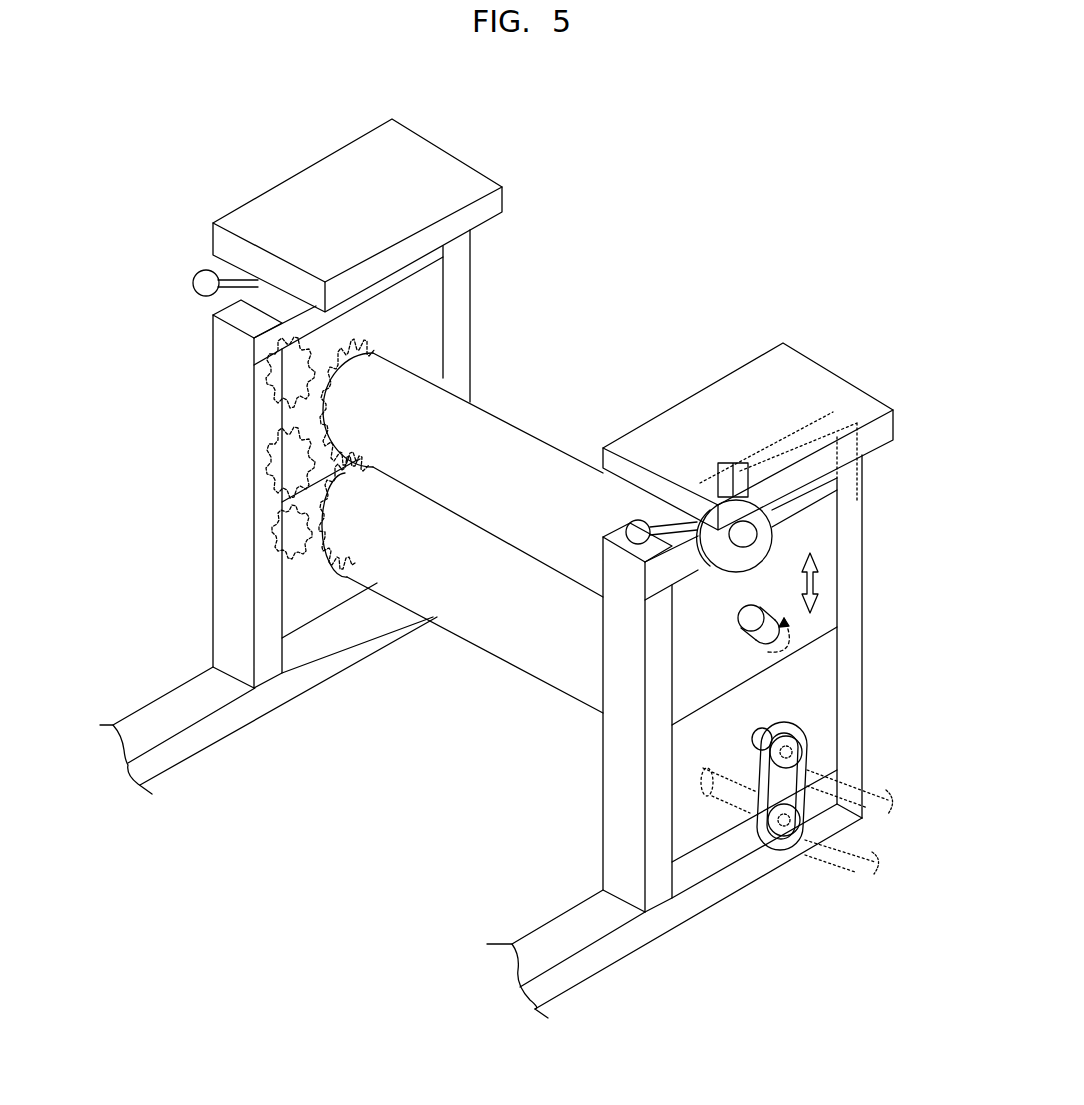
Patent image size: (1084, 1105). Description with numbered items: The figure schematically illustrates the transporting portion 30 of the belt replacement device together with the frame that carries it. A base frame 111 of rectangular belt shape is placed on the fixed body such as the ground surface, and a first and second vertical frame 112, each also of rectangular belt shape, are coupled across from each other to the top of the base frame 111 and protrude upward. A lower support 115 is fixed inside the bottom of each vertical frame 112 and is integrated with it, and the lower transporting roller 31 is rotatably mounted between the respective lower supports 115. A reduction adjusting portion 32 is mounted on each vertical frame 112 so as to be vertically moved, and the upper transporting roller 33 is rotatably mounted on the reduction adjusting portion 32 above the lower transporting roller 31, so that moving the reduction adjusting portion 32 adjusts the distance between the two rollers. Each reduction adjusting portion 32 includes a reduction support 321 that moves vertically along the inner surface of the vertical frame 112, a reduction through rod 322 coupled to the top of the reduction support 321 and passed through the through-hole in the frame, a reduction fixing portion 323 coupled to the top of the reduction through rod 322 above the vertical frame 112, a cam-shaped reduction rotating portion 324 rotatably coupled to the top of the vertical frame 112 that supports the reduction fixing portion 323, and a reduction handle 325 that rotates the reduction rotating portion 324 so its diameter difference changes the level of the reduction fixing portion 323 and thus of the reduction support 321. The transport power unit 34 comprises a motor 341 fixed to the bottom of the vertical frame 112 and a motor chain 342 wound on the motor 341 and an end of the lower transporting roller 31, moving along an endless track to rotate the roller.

The transporting portion 30 is at (838, 112).
The lower transporting roller 31 is at (473, 620).
The upper transporting roller 33 is at (490, 430).
The reduction adjusting portion 32 is at (238, 190).
The reduction support 321 is at (812, 527).
The reduction through rod 322 is at (733, 463).
The reduction fixing portion 323 is at (812, 550).
The reduction rotating portion 324 is at (737, 500).
The reduction handle 325 is at (640, 518).
The transport power unit 34 is at (797, 881).
The motor 341 is at (727, 782).
The motor chain 342 is at (828, 813).
The base frame 111 is at (187, 705).
The vertical frame 112 is at (235, 453).
The lower support 115 is at (680, 757).